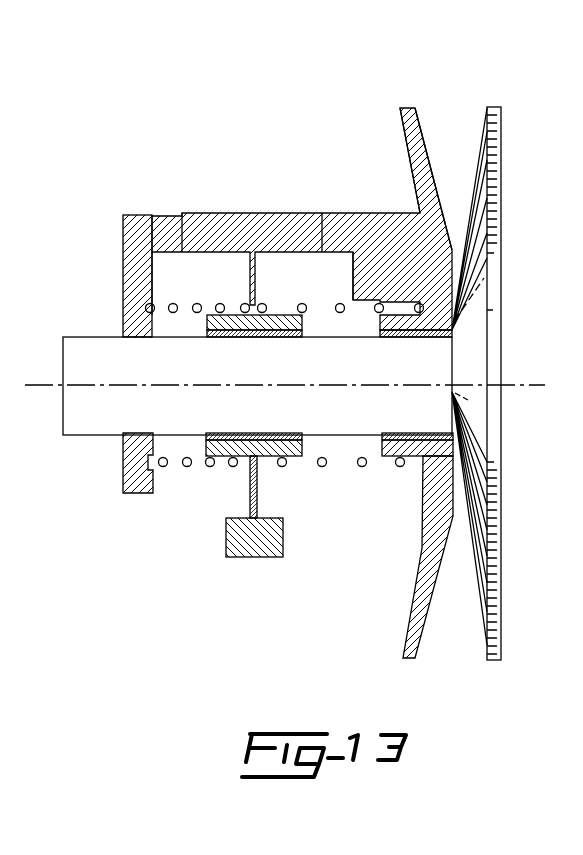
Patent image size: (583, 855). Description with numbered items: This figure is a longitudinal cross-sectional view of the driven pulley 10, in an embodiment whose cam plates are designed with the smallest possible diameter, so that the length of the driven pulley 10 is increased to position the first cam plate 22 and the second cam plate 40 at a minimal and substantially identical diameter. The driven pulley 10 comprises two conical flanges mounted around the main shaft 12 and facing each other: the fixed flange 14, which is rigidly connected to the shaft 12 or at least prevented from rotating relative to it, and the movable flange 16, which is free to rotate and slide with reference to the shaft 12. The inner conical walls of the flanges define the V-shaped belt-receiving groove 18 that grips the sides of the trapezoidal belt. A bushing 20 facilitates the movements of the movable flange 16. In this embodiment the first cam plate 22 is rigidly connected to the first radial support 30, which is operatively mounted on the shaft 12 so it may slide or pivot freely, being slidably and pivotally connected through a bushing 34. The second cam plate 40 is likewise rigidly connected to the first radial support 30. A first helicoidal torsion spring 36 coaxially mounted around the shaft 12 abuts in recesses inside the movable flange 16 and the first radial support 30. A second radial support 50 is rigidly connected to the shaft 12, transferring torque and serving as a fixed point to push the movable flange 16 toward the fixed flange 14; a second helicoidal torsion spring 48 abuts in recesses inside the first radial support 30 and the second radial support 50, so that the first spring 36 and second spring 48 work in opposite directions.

The driven pulley 10 is at (128, 118).
The main shaft 12 is at (63, 365).
The fixed flange 14 is at (500, 115).
The movable flange 16 is at (403, 108).
The belt-receiving groove 18 is at (466, 144).
The bushing 20 is at (447, 337).
The first cam plate 22 is at (272, 213).
The first radial support 30 is at (250, 286).
The bushing 34 is at (250, 337).
The first spring 36 is at (340, 318).
The second cam plate 40 is at (192, 213).
The second spring 48 is at (173, 313).
The second radial support 50 is at (123, 250).